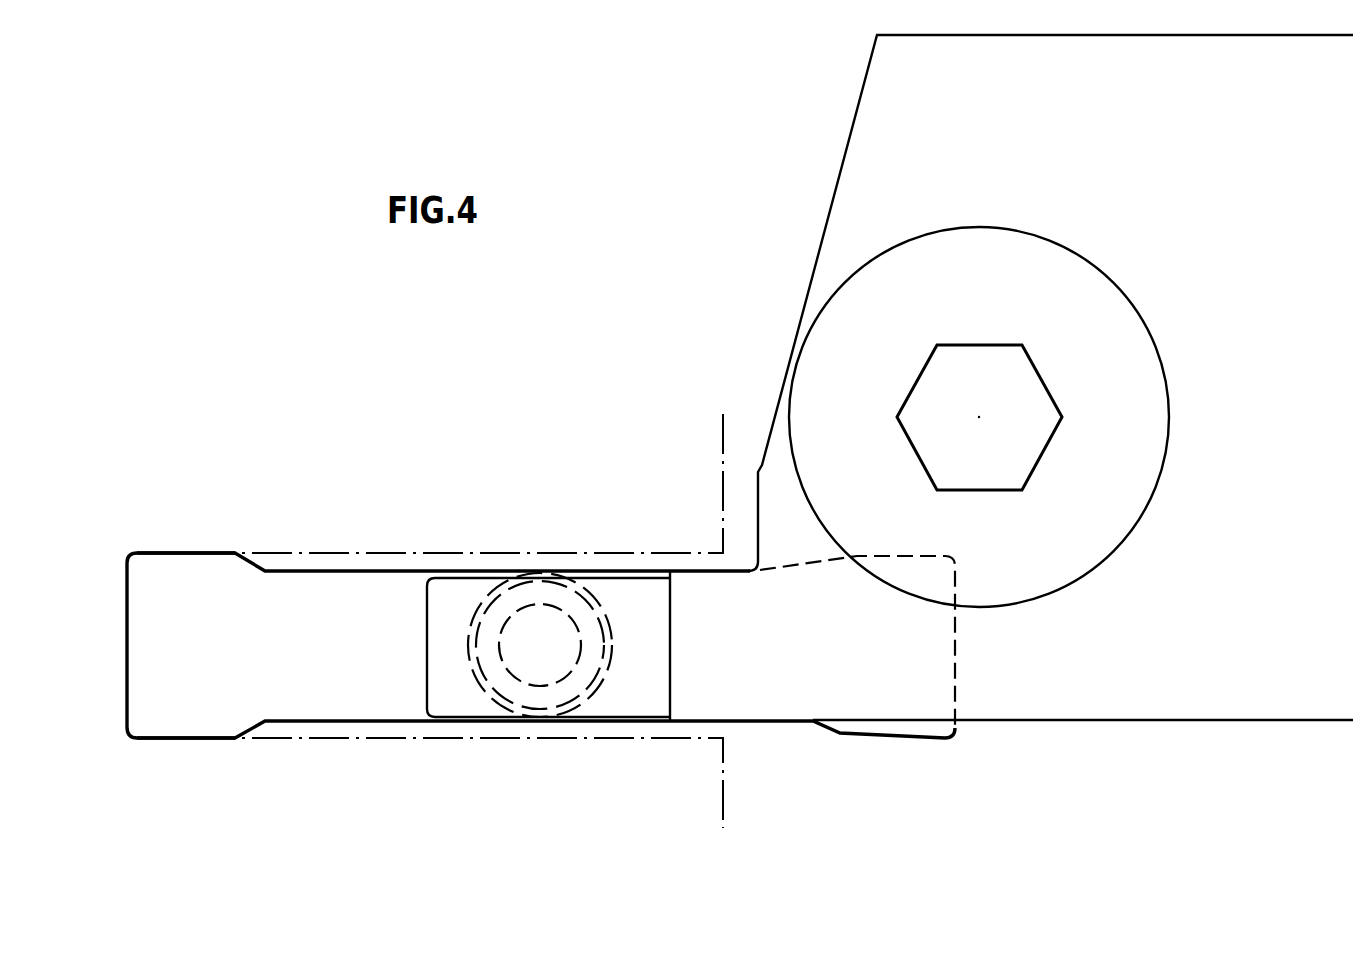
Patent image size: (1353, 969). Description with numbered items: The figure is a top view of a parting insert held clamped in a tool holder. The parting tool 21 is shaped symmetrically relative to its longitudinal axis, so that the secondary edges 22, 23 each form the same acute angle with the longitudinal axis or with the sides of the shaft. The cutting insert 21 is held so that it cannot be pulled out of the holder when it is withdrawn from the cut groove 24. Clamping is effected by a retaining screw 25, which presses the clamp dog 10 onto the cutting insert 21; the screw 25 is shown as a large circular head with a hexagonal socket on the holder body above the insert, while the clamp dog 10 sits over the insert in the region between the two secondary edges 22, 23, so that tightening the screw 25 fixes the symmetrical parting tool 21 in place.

The clamp dog 10 is at (450, 605).
The parting tool 21 is at (328, 655).
The secondary edge 22 is at (208, 553).
The secondary edge 23 is at (198, 740).
The cut groove 24 is at (357, 551).
The retaining screw 25 is at (890, 348).